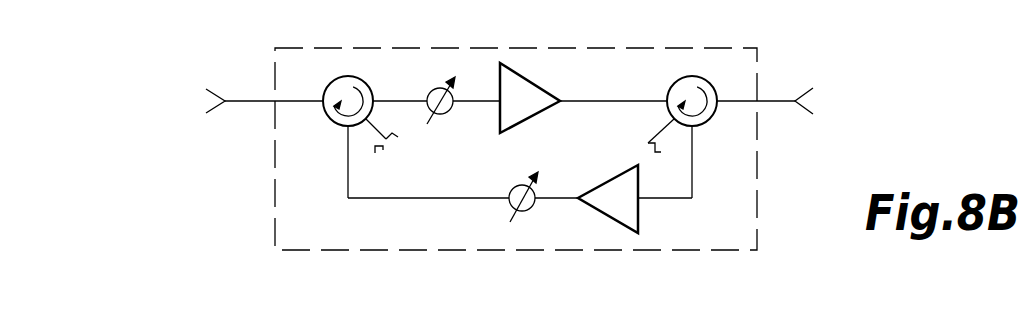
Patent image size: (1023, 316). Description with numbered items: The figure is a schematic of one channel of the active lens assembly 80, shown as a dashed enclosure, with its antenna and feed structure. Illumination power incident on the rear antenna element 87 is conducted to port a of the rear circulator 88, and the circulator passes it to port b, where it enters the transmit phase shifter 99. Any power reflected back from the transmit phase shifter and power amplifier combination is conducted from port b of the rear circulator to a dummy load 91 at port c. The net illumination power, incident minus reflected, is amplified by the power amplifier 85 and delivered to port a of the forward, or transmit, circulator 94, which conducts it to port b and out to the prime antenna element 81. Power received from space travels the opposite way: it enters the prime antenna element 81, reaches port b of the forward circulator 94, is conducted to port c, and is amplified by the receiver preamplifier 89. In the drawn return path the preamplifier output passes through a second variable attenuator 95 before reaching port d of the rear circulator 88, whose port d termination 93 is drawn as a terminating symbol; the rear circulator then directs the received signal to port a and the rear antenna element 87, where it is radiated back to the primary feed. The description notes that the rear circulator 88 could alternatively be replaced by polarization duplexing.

The active lens assembly 80 is at (767, 173).
The prime antenna element 81 is at (802, 97).
The power amplifier 85 is at (536, 112).
The rear antenna elements 87 is at (212, 91).
The rear circulator 88 is at (330, 117).
The receiver preamplifier 89 is at (639, 212).
The dummy load 91 is at (398, 137).
The terminator at port D of second circulator 93 is at (644, 141).
The forward (transmit) circulator 94 is at (712, 121).
The second variable attenuator 95 is at (533, 210).
The transmit phase shifter 99 is at (450, 113).